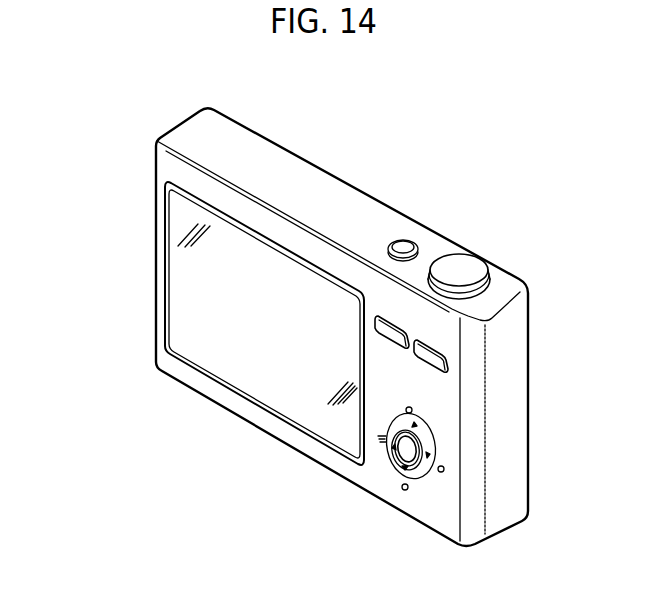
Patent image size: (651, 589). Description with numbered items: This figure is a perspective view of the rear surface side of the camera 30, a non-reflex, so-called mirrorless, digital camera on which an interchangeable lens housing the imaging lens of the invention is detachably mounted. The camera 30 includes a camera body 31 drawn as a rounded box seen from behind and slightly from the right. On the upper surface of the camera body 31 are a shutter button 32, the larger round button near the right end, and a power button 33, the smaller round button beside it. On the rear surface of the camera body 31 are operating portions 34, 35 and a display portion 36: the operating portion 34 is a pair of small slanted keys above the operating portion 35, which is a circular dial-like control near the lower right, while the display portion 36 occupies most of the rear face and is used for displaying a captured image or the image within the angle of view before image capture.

The camera 30 is at (113, 249).
The camera body 31 is at (518, 434).
The shutter button 32 is at (466, 268).
The power button 33 is at (405, 246).
The operating portion 34 is at (448, 373).
The operating portion 35 is at (420, 473).
The display portion 36 is at (247, 385).